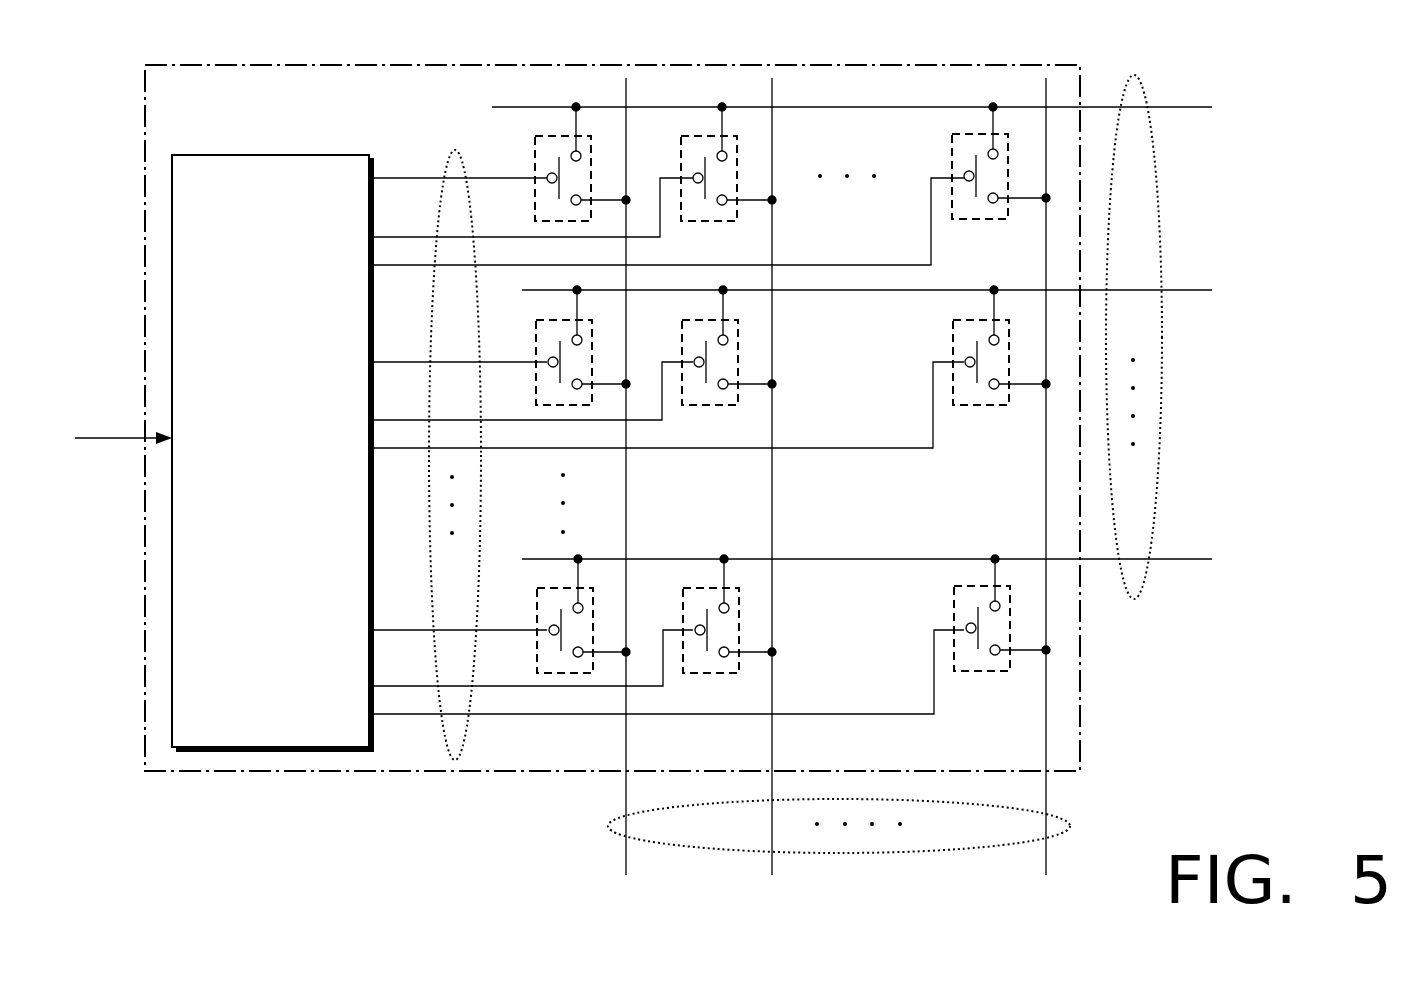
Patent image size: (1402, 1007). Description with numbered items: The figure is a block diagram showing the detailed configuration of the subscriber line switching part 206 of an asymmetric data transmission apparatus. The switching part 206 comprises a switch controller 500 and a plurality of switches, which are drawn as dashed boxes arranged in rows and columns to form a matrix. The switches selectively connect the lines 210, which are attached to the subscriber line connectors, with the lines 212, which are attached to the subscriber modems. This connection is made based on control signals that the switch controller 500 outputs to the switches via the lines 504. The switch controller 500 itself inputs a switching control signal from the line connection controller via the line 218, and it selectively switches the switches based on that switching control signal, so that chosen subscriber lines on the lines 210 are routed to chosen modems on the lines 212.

The subscriber line switching part 206 is at (664, 63).
The switch controller 500 is at (267, 153).
The lines 504 is at (440, 170).
The lines 212 is at (1162, 165).
The lines 210 is at (945, 849).
The line 218 is at (117, 435).